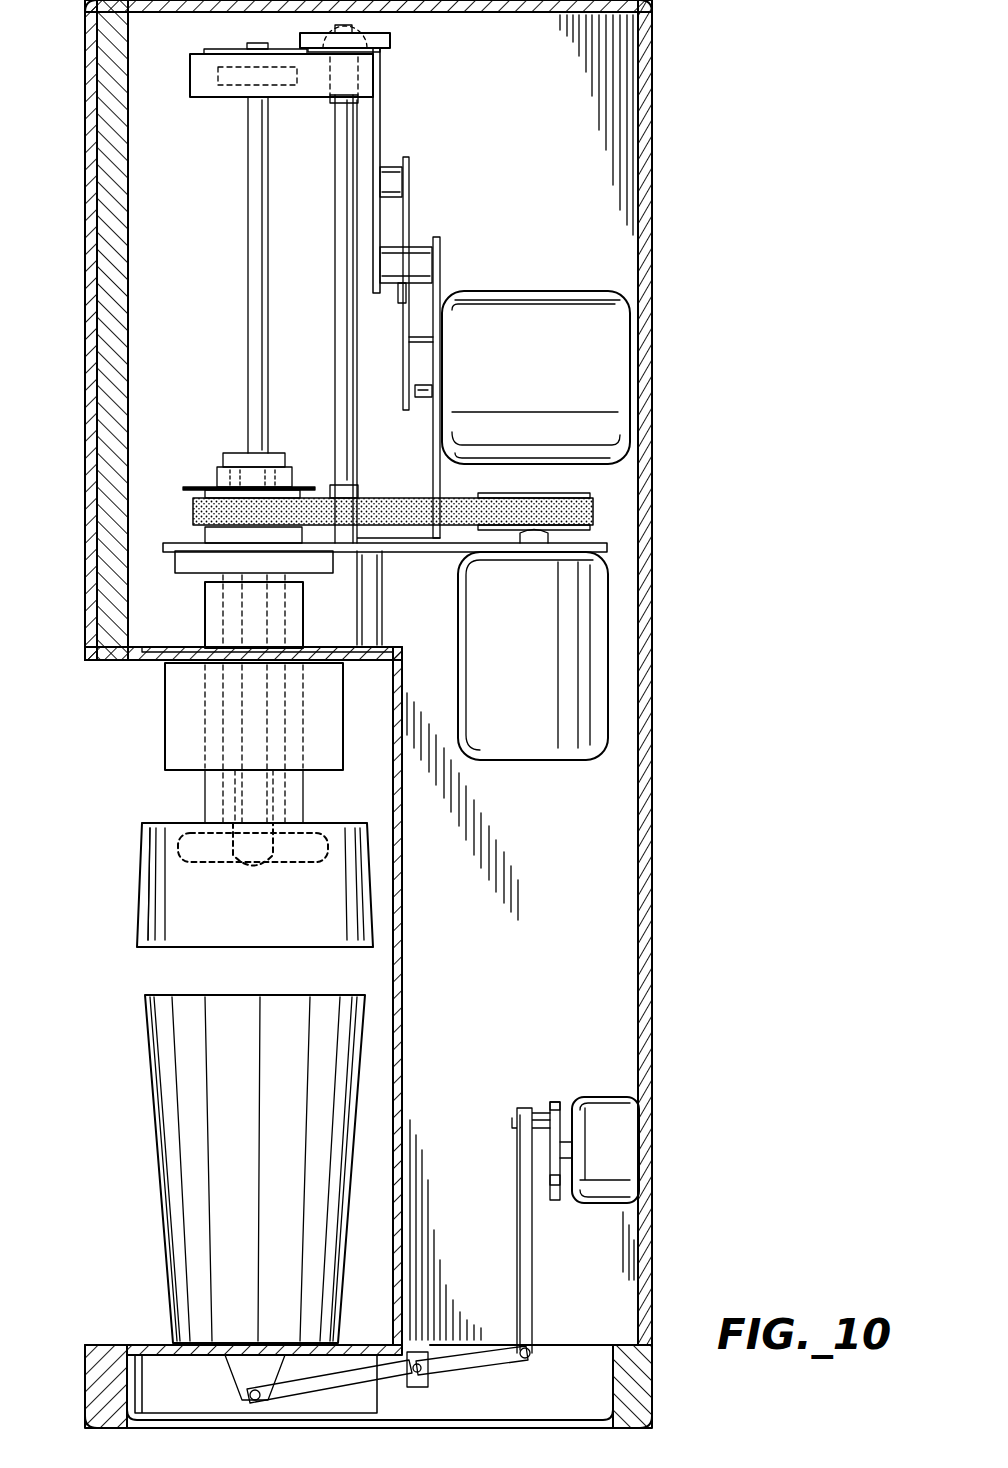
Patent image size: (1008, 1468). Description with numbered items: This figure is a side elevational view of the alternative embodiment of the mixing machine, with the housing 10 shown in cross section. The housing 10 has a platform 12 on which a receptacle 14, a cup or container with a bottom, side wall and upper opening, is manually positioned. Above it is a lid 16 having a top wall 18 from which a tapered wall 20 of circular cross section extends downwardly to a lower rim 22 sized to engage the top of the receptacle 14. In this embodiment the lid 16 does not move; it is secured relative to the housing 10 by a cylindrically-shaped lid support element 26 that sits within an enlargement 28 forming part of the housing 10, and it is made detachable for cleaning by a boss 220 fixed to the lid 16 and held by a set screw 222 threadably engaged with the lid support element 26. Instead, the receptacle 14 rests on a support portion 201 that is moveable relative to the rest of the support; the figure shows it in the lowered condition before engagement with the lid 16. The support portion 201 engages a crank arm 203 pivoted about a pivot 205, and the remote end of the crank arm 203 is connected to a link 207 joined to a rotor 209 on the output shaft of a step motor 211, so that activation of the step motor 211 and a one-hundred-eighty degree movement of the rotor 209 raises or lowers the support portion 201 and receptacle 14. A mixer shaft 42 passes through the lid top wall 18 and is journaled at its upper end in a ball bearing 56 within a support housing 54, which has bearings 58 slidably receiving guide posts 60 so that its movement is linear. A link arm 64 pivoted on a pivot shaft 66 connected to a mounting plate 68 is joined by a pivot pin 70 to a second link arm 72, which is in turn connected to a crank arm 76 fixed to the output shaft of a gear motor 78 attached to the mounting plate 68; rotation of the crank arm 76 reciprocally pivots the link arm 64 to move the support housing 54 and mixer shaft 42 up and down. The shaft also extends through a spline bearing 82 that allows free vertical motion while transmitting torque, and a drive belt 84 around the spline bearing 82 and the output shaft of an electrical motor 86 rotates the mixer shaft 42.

The housing 10 is at (660, 852).
The platform 12 is at (120, 1345).
The receptacle 14 is at (185, 1080).
The lid 16 is at (150, 922).
The top wall 18 is at (355, 823).
The tapered wall 20 is at (150, 880).
The lower rim 22 is at (165, 947).
The lid support element 26 is at (200, 617).
The enlargement 28 is at (343, 712).
The mixer shaft 42 is at (250, 215).
The support housing 54 is at (190, 76).
The ball bearing 56 is at (285, 85).
The bearings 58 is at (385, 50).
The guide posts 60 is at (348, 460).
The link arm 64 is at (390, 130).
The pivot shaft 66 is at (420, 255).
The mounting plate 68 is at (445, 260).
The pivot pin 70 is at (395, 178).
The second link arm 72 is at (398, 290).
The crank arm 76 is at (425, 325).
The gear motor 78 is at (555, 300).
The spline bearing 82 is at (200, 490).
The drive belt 84 is at (593, 508).
The electrical motor 86 is at (528, 760).
The support portion 201 is at (162, 1345).
The crank arm 203 is at (500, 1364).
The pivot 205 is at (425, 1372).
The link 207 is at (515, 1200).
The rotor 209 is at (552, 1100).
The step motor 211 is at (612, 1200).
The boss 220 is at (222, 786).
The set screw 222 is at (222, 798).